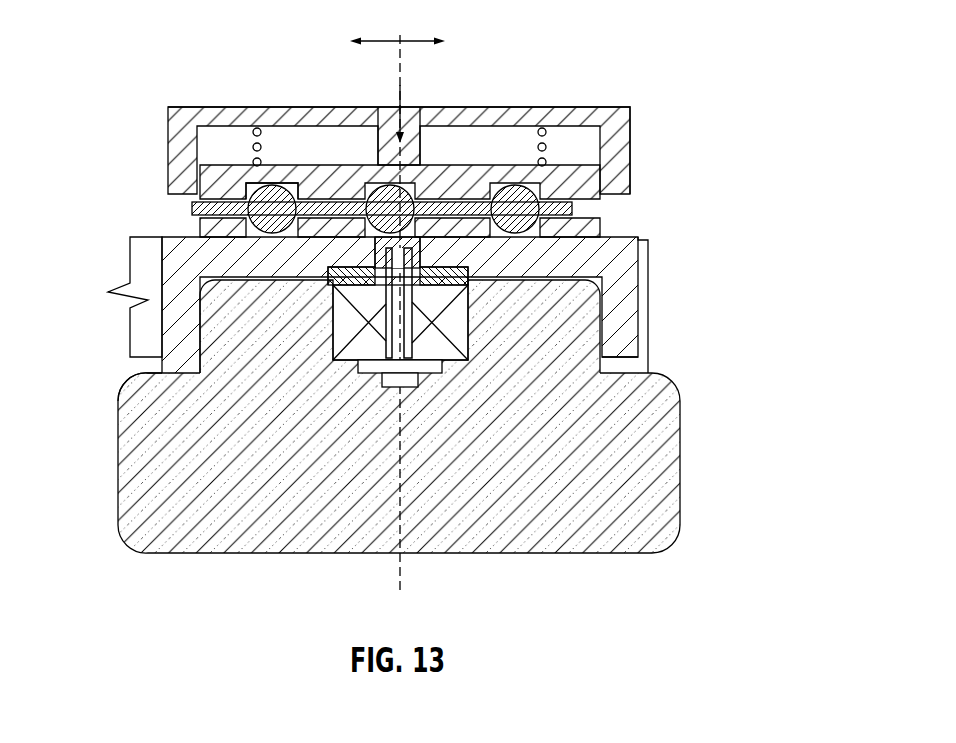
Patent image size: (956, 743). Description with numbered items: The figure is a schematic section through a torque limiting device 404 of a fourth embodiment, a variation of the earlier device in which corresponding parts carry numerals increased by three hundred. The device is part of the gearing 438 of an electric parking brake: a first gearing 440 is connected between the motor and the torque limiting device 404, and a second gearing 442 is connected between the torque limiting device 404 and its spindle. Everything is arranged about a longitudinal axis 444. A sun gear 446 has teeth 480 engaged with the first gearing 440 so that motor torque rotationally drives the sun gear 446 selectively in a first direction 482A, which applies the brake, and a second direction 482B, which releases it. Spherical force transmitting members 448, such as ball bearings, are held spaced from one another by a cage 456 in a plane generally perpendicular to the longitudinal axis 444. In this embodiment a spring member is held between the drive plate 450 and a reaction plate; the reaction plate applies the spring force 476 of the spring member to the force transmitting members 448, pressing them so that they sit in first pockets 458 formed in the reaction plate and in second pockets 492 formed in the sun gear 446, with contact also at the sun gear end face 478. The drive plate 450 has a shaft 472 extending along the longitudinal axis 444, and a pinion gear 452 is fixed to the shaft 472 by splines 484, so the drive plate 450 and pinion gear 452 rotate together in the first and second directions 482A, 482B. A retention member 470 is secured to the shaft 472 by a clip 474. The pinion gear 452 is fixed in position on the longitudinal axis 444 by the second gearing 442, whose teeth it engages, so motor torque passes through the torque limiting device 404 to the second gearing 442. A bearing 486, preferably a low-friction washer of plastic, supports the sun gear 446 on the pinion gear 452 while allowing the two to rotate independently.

The torque limiting device 404 is at (658, 120).
The gearing 438 is at (125, 366).
The first gearing 440 is at (130, 332).
The second gearing 442 is at (680, 470).
The longitudinal axis 444 is at (401, 82).
The sun gear 446 is at (633, 347).
The force transmitting members 448 is at (543, 198).
The drive plate 450 is at (622, 107).
The pinion gear 452 is at (470, 322).
The cage 456 is at (252, 147).
The first pockets 458 is at (247, 193).
The retention member 470 is at (362, 368).
The shaft 472 is at (416, 336).
The clip 474 is at (413, 373).
The spring force 476 is at (380, 127).
The sun gear end face 478 is at (630, 237).
The teeth 480 is at (648, 305).
The first direction 482A is at (423, 37).
The second direction 482B is at (377, 37).
The splines 484 is at (413, 348).
The bearing 486 is at (347, 277).
The second pockets 492 is at (247, 230).